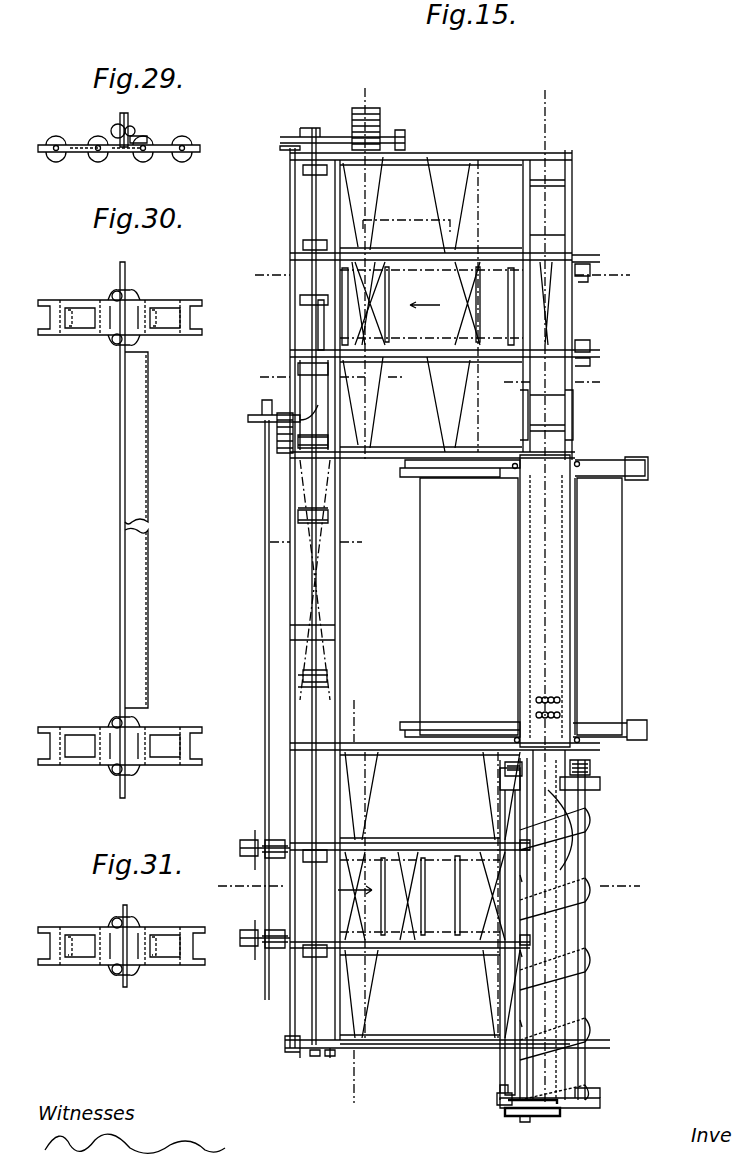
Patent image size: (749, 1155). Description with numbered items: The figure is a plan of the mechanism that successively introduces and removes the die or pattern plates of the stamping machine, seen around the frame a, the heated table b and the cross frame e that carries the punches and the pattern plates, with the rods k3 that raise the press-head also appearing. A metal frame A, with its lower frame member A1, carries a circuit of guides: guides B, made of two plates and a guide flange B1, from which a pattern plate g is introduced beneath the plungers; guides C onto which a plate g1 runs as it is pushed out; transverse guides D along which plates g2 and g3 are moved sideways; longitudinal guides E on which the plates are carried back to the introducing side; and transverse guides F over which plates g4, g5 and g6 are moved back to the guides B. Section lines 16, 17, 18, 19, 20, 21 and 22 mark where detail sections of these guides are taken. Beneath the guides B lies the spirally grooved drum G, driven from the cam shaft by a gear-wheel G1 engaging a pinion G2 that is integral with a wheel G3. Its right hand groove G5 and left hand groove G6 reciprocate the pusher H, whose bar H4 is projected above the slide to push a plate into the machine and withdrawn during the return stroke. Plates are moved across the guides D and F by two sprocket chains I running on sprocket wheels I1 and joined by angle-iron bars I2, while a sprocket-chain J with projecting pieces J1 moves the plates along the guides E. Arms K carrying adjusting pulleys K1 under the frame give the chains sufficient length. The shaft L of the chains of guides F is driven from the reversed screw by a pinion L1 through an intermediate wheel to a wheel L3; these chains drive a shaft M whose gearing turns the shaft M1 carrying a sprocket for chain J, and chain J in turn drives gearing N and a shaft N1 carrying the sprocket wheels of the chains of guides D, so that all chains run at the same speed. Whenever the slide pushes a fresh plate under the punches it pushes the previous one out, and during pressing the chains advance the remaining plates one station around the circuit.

In FIG. 15, the section line 19 19 is at (448, 482).
In FIG. 15, the section line 17 17 is at (443, 269).
In FIG. 15, the section line 18 18 is at (554, 379).
In FIG. 15, the section line 20 20 is at (321, 373).
In FIG. 15, the section line 21 21 is at (328, 539).
In FIG. 15, the section line 22 22 is at (355, 901).
In FIG. 15, the section line 16 16 is at (429, 887).
In FIG. 15, the metal frame A is at (456, 158).
In FIG. 15, the frame base A1 is at (428, 1048).
In FIG. 15, the guides B is at (545, 838).
In FIG. 15, the guide flange B1 is at (560, 880).
In FIG. 15, the guides C is at (540, 228).
In FIG. 15, the transverse guides D is at (418, 173).
In FIG. 15, the longitudinal guides E is at (335, 210).
In FIG. 15, the transverse guides F is at (405, 753).
In FIG. 15, the drum G is at (582, 982).
In FIG. 15, the gear-wheel G1 is at (515, 778).
In FIG. 15, the pinion G2 is at (590, 770).
In FIG. 15, the wheel G3 is at (600, 760).
In FIG. 15, the right hand groove G5 is at (582, 952).
In FIG. 15, the left hand groove G6 is at (582, 1014).
In FIG. 15, the pusher H is at (555, 790).
In FIG. 15, the bar H4 is at (549, 911).
In FIG. 29, the sprocket chains I is at (152, 146).
In FIG. 30, the sprocket chains I is at (160, 315).
In FIG. 15, the sprocket chains I is at (514, 274).
In FIG. 15, the sprocket wheels I1 is at (425, 886).
In FIG. 30, the bars I2 is at (145, 524).
In FIG. 15, the bars I2 is at (388, 318).
In FIG. 31, the sprocket-chain J is at (80, 927).
In FIG. 15, the sprocket-chain J is at (318, 327).
In FIG. 31, the projecting pieces J1 is at (128, 922).
In FIG. 15, the arms K is at (580, 256).
In FIG. 15, the adjusting pulleys K1 is at (585, 266).
In FIG. 15, the shaft L is at (540, 906).
In FIG. 15, the pinion L1 is at (548, 1112).
In FIG. 15, the wheel L3 is at (497, 1108).
In FIG. 15, the shaft M is at (266, 490).
In FIG. 15, the shaft M1 is at (305, 442).
In FIG. 15, the gearing N is at (342, 129).
In FIG. 15, the shaft N1 is at (333, 294).
In FIG. 15, the frame a is at (620, 466).
In FIG. 15, the table b is at (521, 606).
In FIG. 15, the frame e is at (575, 684).
In FIG. 15, the die or pattern plate g is at (485, 597).
In FIG. 15, the pattern plate g1 is at (544, 303).
In FIG. 15, the pattern plate g2 is at (441, 301).
In FIG. 15, the pattern plate g3 is at (368, 303).
In FIG. 15, the pattern plate g4 is at (314, 580).
In FIG. 15, the pattern plate g5 is at (344, 886).
In FIG. 15, the pattern plate g6 is at (409, 896).
In FIG. 15, the rods k3 is at (580, 456).